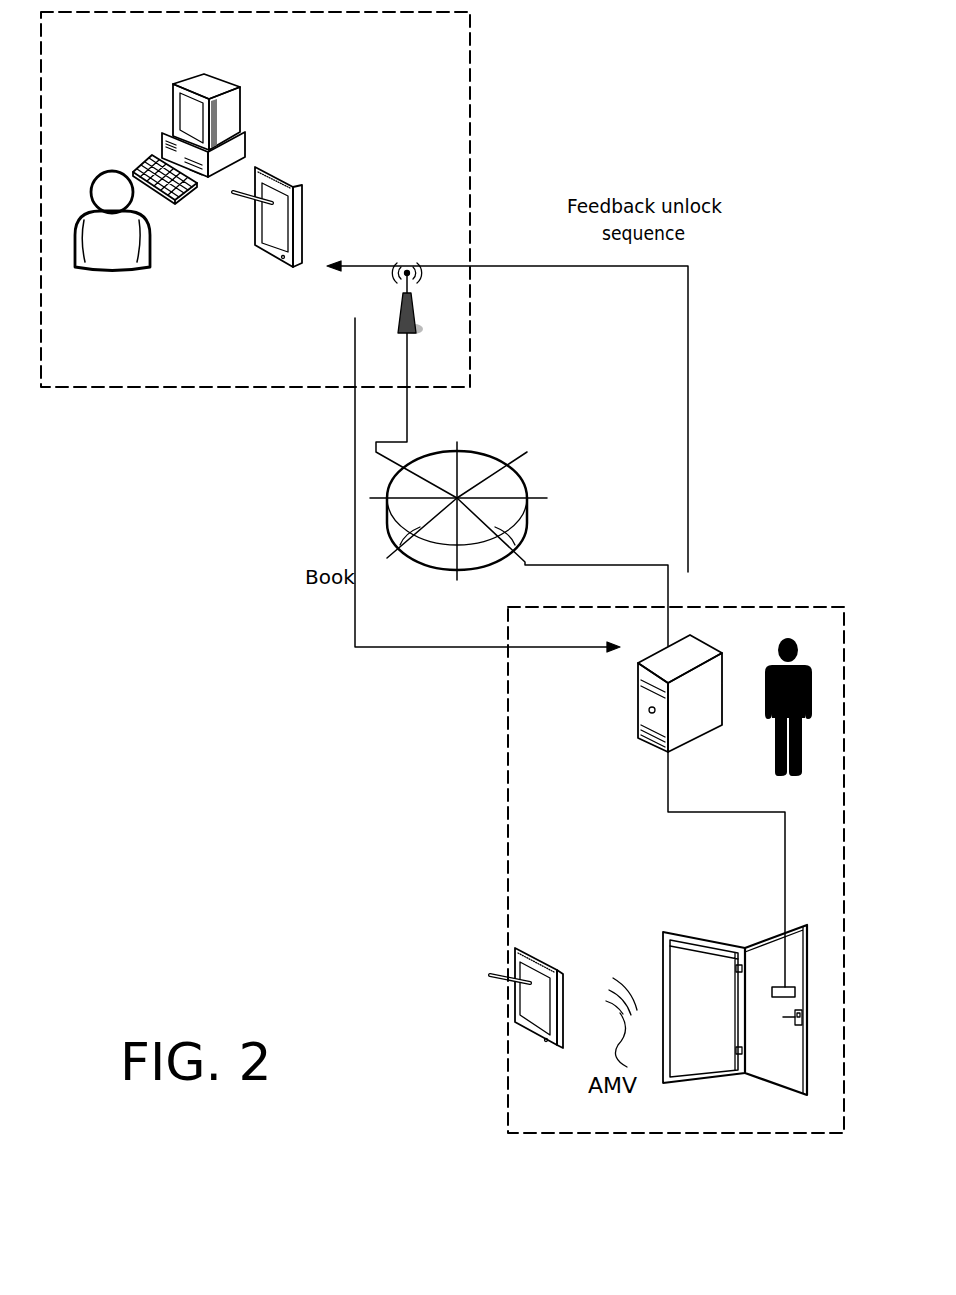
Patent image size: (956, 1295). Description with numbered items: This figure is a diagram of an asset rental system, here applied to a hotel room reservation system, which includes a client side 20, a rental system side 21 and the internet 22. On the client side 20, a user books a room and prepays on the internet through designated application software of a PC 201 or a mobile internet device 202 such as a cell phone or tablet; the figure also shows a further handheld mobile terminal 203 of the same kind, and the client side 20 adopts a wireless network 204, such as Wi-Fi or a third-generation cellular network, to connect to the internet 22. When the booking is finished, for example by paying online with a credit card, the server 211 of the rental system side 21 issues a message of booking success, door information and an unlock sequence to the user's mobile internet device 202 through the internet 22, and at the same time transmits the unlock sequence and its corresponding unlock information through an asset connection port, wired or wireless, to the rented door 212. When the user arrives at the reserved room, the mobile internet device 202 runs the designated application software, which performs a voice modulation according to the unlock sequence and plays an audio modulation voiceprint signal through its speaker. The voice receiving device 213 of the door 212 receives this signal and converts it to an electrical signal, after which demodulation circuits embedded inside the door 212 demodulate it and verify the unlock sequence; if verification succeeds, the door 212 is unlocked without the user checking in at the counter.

The client side 20 is at (257, 385).
The PC 201 is at (102, 172).
The mobile internet device 202 is at (230, 92).
The mobile terminal 203 is at (283, 177).
The wireless network 204 is at (407, 268).
The internet 22 is at (485, 452).
The rental system side 21 is at (508, 847).
The server 211 is at (638, 693).
The door 212 is at (663, 932).
The voice receiving device 213 is at (772, 993).